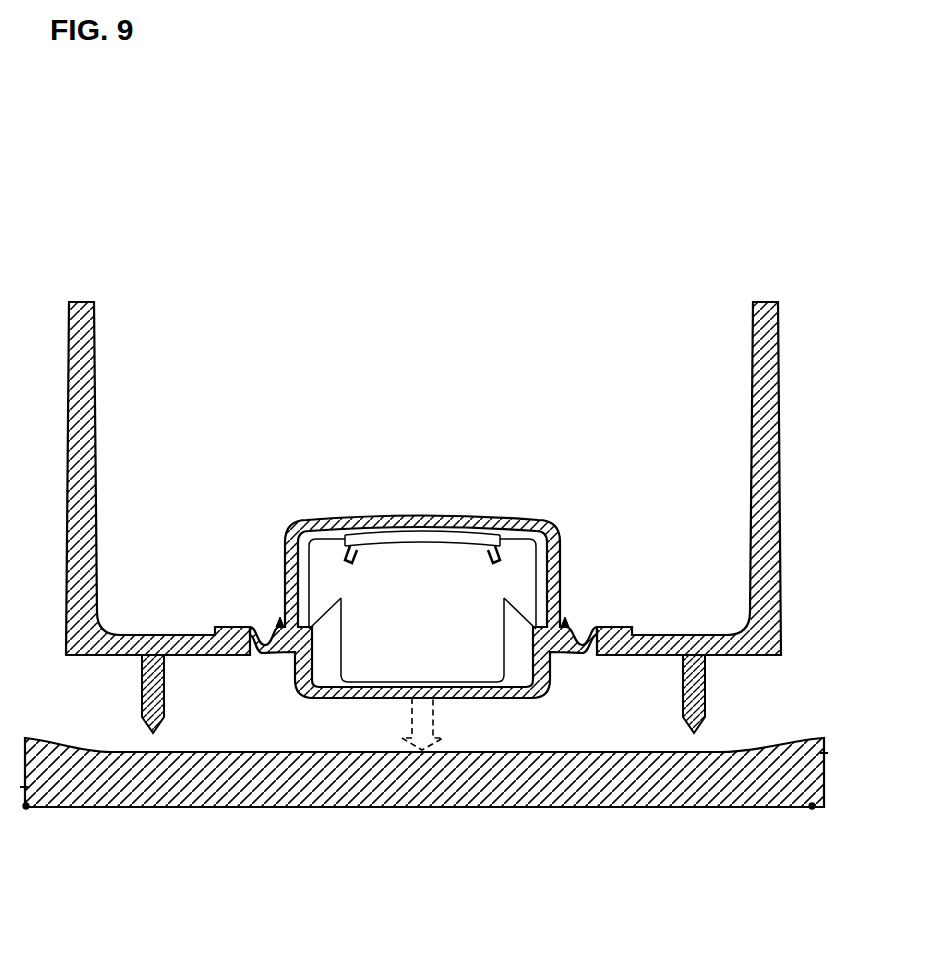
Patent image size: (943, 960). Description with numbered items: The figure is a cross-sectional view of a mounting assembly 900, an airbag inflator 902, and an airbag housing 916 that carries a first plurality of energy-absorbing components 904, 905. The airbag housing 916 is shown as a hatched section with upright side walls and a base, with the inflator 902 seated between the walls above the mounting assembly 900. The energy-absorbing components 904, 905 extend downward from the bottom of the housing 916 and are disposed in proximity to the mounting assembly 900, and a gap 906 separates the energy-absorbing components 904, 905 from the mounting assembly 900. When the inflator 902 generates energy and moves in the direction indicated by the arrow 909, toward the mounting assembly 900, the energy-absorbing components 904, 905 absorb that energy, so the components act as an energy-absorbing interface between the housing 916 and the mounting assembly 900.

The mounting assembly 900 is at (338, 807).
The airbag inflator 902 is at (505, 518).
The energy-absorbing component 904 is at (142, 698).
The energy-absorbing component 905 is at (706, 695).
The gap 906 is at (165, 746).
The arrow 909 is at (433, 718).
The airbag housing 916 is at (97, 458).